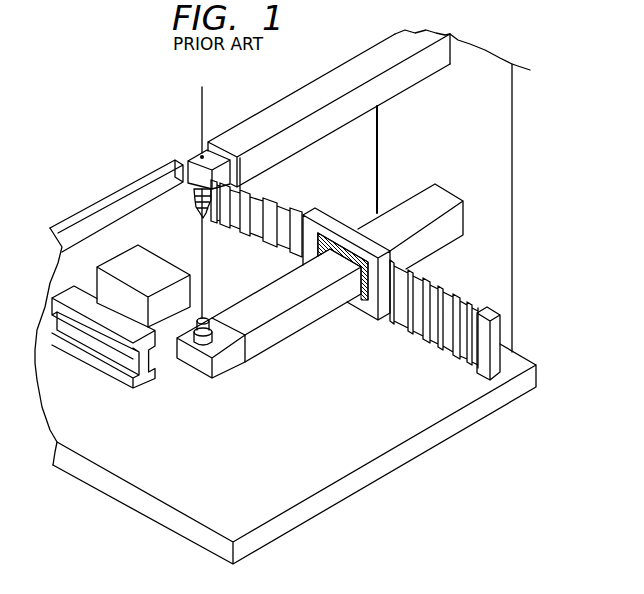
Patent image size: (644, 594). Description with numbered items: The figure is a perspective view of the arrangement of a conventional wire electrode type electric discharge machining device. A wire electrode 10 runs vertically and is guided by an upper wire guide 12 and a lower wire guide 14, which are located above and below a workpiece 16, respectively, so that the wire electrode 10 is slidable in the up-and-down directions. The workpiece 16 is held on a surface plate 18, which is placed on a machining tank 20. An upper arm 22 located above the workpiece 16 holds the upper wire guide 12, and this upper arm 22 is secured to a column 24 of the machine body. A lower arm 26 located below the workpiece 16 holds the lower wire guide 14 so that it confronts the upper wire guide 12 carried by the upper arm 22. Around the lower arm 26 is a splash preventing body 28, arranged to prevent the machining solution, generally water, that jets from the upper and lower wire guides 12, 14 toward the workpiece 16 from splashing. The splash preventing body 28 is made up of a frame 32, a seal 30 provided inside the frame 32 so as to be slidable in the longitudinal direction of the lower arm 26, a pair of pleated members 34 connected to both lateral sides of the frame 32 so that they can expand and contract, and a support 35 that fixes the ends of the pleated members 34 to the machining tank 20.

The wire electrode 10 is at (202, 108).
The upper wire guide 12 is at (187, 157).
The lower wire guide 14 is at (202, 373).
The workpiece 16 is at (112, 258).
The surface plate 18 is at (113, 375).
The machining tank 20 is at (158, 515).
The upper arm 22 is at (282, 105).
The column 24 is at (377, 157).
The lower arm 26 is at (273, 340).
The splash preventing body 28 is at (477, 360).
The seal 30 is at (371, 300).
The frame 32 is at (376, 320).
The pleated members 34 is at (443, 292).
The support 35 is at (496, 328).